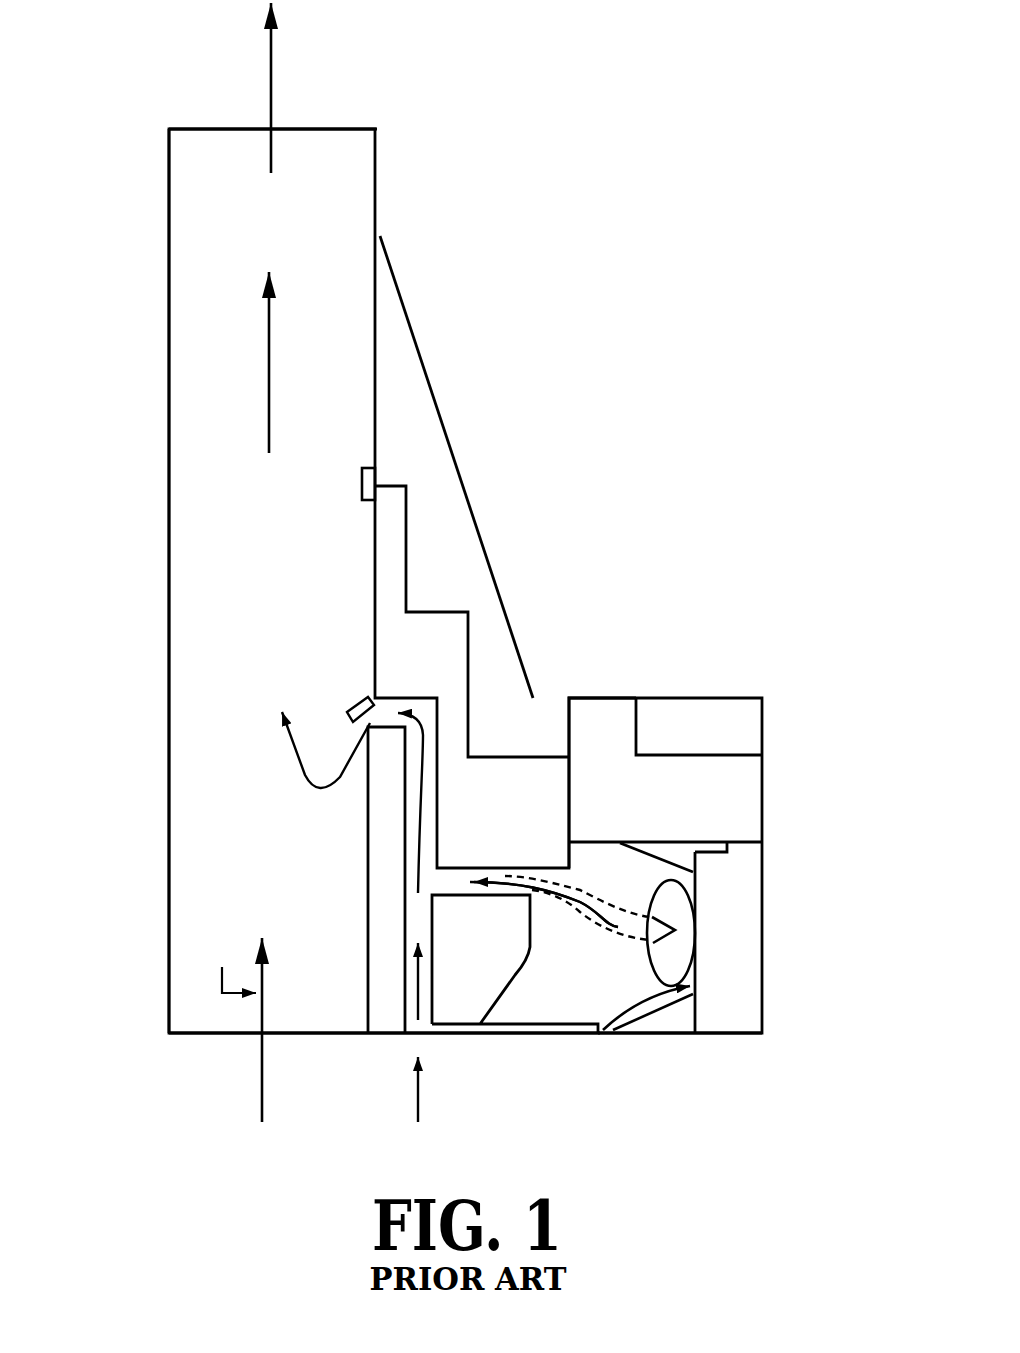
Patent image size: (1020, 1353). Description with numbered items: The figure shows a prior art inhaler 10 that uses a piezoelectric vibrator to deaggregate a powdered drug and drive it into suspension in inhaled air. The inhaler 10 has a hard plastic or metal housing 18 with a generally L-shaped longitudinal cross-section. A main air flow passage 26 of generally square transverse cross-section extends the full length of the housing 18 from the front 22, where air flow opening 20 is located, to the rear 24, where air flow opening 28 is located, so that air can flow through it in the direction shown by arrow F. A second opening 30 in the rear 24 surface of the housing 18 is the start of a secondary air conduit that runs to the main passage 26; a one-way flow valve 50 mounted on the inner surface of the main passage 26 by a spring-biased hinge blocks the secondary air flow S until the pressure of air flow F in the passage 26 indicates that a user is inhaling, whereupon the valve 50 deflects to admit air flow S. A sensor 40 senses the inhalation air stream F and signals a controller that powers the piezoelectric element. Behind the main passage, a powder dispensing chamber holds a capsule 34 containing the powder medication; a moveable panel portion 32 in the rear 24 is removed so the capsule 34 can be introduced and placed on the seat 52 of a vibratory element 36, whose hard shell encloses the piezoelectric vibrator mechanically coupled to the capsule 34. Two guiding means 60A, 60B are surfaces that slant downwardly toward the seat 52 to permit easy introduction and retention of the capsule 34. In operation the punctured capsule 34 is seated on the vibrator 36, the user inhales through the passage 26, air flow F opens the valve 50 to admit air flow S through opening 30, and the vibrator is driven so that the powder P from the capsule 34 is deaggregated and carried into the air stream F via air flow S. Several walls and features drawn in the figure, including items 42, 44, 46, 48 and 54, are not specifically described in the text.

The inhaler 10 is at (168, 593).
The housing 18 is at (462, 567).
The air flow opening 20 is at (215, 135).
The front 22 is at (172, 130).
The rear 24 is at (675, 1035).
The main air flow passage 26 is at (202, 867).
The air flow opening 28 is at (192, 1037).
The air flow opening 30 is at (400, 1036).
The moveable panel portion 32 is at (525, 1037).
The capsule 34 is at (675, 958).
The vibratory element 36 is at (748, 897).
The sensor 40 is at (358, 480).
The stepped wall 42 is at (466, 672).
The plate 44 is at (731, 845).
The upper compartment 46 is at (697, 718).
The compartment 48 is at (602, 718).
The one-way flow valve 50 is at (347, 708).
The seat 52 is at (603, 1030).
The mixing chamber 54 is at (658, 912).
The guiding means 60A is at (635, 1030).
The guiding means 60B is at (657, 852).
The air flow F is at (236, 968).
The powder P is at (612, 942).
The air flow S is at (410, 1100).